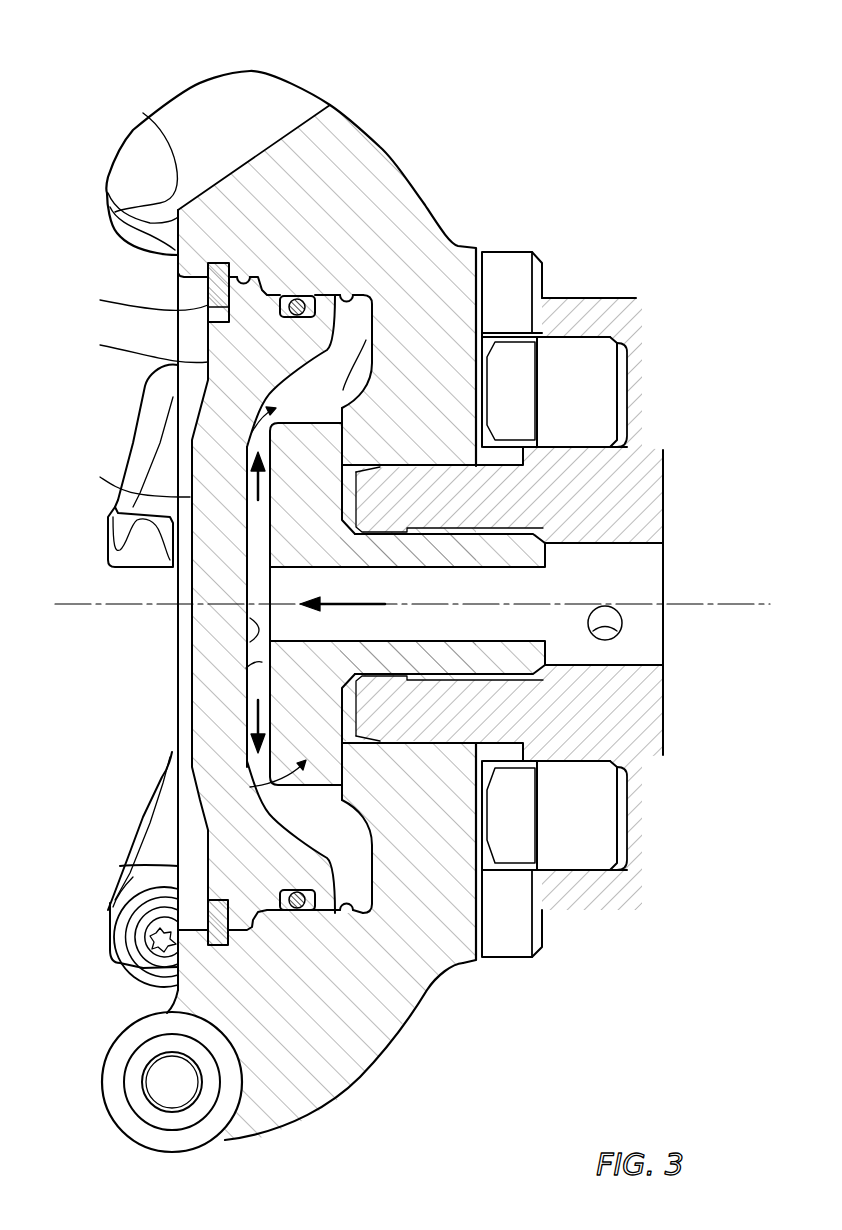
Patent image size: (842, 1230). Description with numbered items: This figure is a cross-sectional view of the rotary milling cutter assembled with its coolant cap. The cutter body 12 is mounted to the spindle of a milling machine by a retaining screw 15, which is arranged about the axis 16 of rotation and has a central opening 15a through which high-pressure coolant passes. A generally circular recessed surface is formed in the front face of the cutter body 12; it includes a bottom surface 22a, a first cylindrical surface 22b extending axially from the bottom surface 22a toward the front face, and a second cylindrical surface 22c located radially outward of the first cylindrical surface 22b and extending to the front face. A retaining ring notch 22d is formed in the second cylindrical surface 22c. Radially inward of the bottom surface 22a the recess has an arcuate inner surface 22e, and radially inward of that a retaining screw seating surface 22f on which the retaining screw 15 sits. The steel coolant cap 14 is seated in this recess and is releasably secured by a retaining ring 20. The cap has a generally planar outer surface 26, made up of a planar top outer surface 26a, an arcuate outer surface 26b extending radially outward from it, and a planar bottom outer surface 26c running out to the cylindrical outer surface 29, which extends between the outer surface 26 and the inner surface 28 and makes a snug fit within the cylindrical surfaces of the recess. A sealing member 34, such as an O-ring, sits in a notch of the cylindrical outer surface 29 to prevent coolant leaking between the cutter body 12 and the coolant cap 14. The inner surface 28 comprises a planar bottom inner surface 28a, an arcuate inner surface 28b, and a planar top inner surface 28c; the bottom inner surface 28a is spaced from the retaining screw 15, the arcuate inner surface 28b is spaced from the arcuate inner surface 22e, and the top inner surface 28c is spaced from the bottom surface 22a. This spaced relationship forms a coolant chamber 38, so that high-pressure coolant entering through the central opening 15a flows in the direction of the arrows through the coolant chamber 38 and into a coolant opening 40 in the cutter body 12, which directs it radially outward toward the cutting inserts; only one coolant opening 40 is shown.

The cutter body 12 is at (447, 150).
The coolant cap 14 is at (168, 676).
The retaining screw 15 is at (300, 778).
The central opening 15a is at (452, 592).
The axis of rotation 16 is at (653, 835).
The retaining ring 20 is at (198, 915).
The bottom surface 22a is at (363, 300).
The first cylindrical surface 22b is at (360, 293).
The second cylindrical surface 22c is at (258, 285).
The retaining ring notch 22d is at (215, 262).
The arcuate inner surface 22e is at (345, 406).
The retaining screw seating surface 22f is at (465, 386).
The outer surface 26 is at (162, 588).
The top outer surface 26a is at (195, 500).
The arcuate outer surface 26b is at (215, 365).
The bottom outer surface 26c is at (210, 292).
The inner surface 28 is at (255, 672).
The bottom inner surface 28a is at (258, 645).
The arcuate inner surface 28b is at (287, 832).
The top inner surface 28c is at (370, 912).
The cylindrical outer surface 29 is at (273, 924).
The sealing member 34 is at (300, 296).
The coolant chamber 38 is at (233, 420).
The coolant opening 40 is at (370, 348).